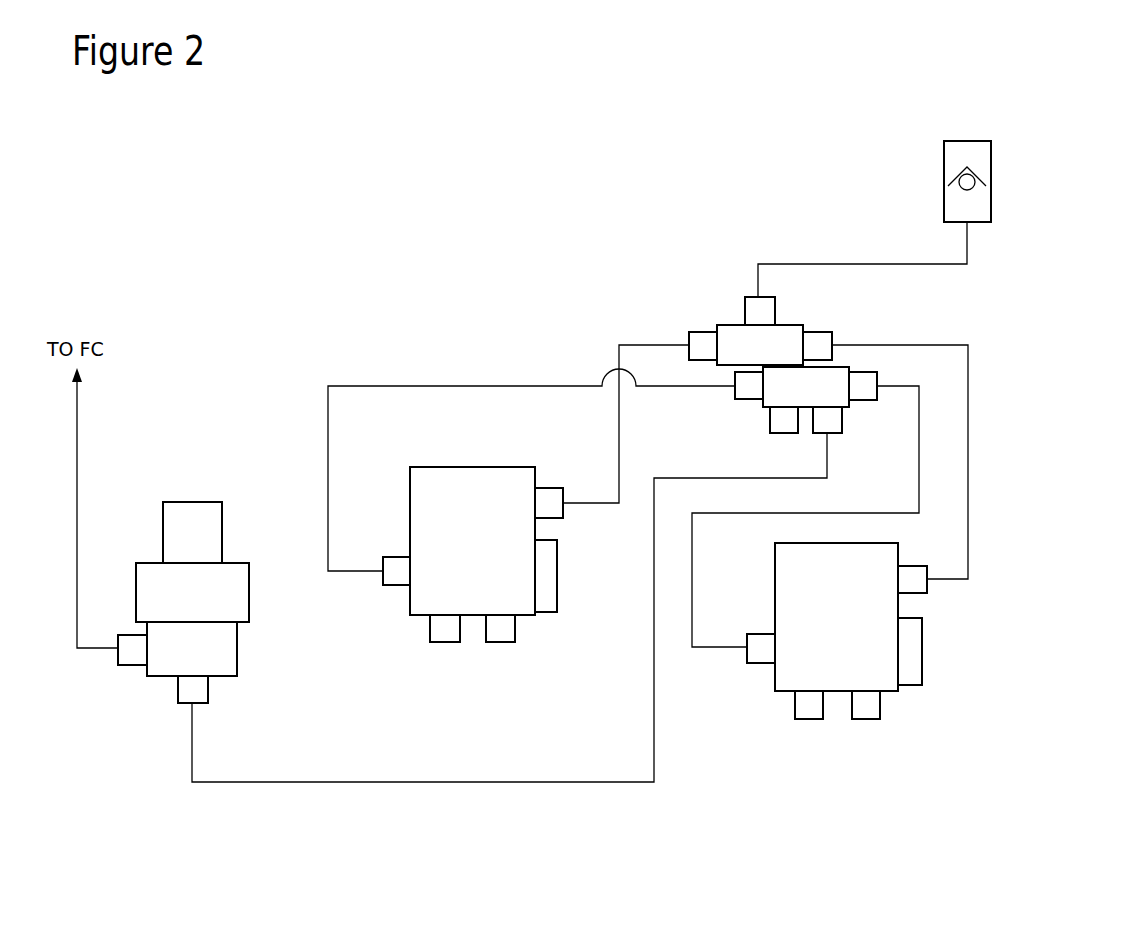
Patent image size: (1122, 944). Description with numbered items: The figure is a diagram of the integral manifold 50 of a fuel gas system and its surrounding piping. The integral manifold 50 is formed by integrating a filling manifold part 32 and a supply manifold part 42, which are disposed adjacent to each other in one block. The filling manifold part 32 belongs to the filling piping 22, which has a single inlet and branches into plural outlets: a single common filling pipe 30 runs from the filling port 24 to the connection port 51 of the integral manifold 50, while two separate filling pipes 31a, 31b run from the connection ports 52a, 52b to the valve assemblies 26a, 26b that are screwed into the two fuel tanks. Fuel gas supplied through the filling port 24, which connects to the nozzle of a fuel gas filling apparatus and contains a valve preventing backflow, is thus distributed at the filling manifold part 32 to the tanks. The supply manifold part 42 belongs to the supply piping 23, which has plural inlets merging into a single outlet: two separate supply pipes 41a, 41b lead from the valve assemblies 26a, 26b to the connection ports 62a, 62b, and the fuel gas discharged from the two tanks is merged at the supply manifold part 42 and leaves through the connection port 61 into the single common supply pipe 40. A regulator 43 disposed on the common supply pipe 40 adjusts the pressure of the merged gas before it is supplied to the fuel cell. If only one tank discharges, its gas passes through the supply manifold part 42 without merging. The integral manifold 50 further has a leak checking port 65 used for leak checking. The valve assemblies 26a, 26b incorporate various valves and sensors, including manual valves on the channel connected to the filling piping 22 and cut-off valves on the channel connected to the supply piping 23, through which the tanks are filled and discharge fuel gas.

The filling piping 22 is at (807, 256).
The supply piping 23 is at (432, 792).
The filling port 24 is at (1002, 187).
The valve assembly 26a is at (480, 600).
The valve assembly 26b is at (865, 653).
The common filling pipe 30 is at (885, 262).
The separate filling pipe 31a is at (616, 450).
The separate filling pipe 31b is at (968, 457).
The filling manifold part 32 is at (728, 337).
The common supply pipe 40 is at (586, 784).
The separate supply pipe 41a is at (432, 385).
The separate supply pipe 41b is at (838, 513).
The supply manifold part 42 is at (840, 395).
The regulator 43 is at (193, 518).
The integral manifold 50 is at (778, 336).
The connection port 51 is at (770, 306).
The connection port 52a is at (700, 343).
The connection port 52b is at (818, 345).
The connection port 61 is at (825, 422).
The connection port 62a is at (750, 385).
The connection port 62b is at (862, 388).
The leak checking port 65 is at (780, 424).